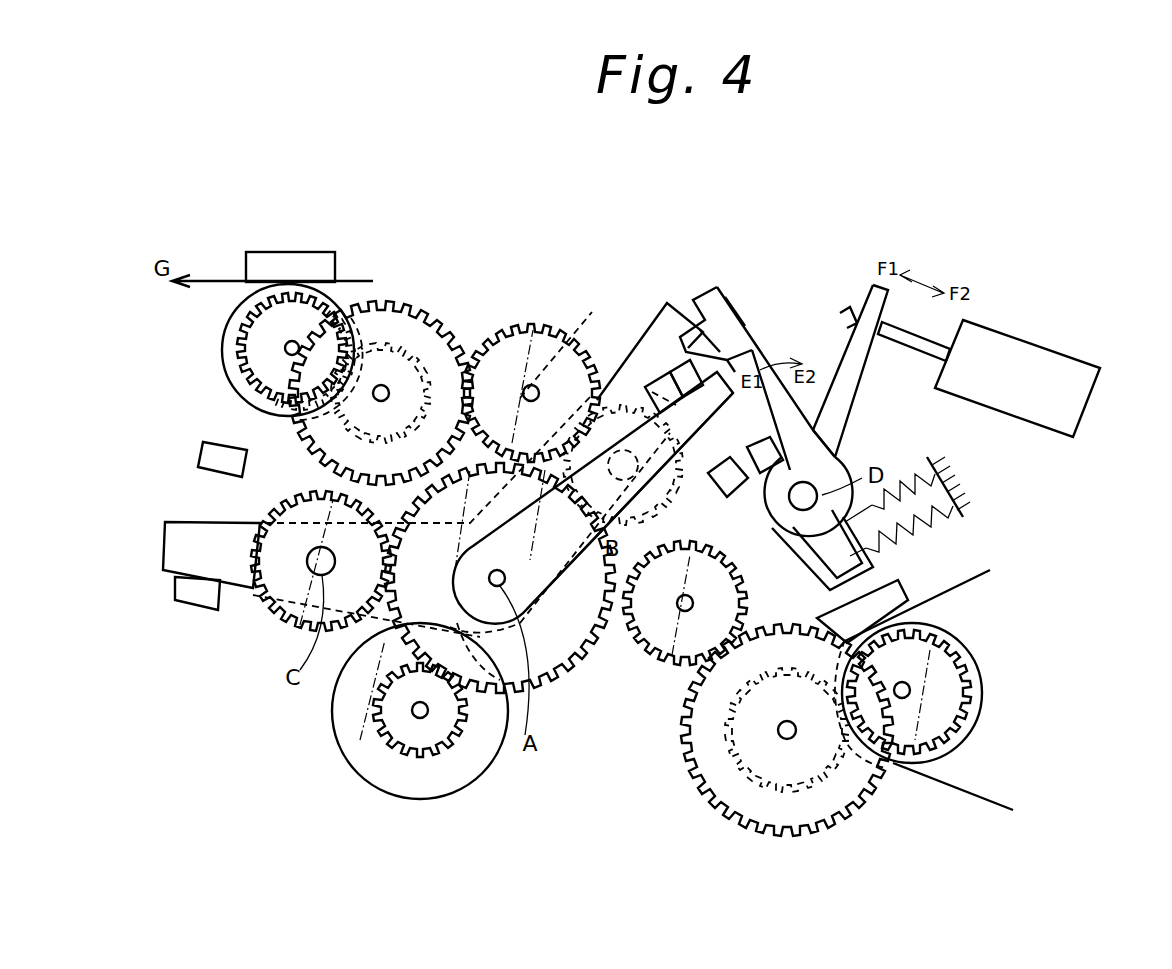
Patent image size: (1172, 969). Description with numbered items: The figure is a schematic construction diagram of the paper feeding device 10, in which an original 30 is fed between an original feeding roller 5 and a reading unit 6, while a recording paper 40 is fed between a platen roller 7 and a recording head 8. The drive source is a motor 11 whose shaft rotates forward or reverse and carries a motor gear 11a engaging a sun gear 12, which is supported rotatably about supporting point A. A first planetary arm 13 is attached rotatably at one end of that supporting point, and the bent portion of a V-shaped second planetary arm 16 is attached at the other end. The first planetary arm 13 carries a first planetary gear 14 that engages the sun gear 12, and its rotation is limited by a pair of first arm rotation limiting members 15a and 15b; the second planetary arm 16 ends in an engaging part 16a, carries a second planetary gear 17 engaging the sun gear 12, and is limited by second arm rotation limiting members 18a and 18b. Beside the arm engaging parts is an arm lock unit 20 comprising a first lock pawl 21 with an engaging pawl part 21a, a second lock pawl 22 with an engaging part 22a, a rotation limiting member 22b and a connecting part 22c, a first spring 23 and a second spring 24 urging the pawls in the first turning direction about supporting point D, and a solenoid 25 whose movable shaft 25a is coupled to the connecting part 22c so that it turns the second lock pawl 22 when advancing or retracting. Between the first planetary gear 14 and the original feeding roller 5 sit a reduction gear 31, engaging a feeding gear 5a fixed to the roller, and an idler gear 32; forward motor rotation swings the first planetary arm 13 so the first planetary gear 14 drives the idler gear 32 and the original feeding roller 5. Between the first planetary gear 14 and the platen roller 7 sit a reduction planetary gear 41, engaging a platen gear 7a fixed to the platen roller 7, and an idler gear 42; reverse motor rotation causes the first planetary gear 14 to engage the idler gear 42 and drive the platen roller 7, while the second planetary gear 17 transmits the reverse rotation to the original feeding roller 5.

The original feeding roller 5 is at (222, 323).
The feeding gear 5a is at (240, 357).
The reading unit 6 is at (302, 252).
The platen roller 7 is at (996, 709).
The platen gear 7a is at (945, 640).
The recording head 8 is at (905, 590).
The paper feeding device 10 is at (700, 190).
The motor 11 is at (383, 806).
The motor gear 11a is at (460, 752).
The sun gear 12 is at (560, 688).
The first planetary arm 13 is at (584, 560).
The first planetary gear 14 is at (636, 357).
The first arm rotation limiting member 15a is at (662, 372).
The first arm rotation limiting member 15b is at (758, 485).
The second planetary arm 16 is at (650, 420).
The engaging part 16a is at (700, 330).
The second planetary gear 17 is at (265, 608).
The second arm rotation limiting member 18a is at (195, 600).
The second arm rotation limiting member 18b is at (200, 458).
The arm lock unit 20 is at (910, 210).
The first lock pawl 21 is at (838, 465).
The engaging pawl part 21a is at (715, 465).
The second lock pawl 22 is at (769, 336).
The engaging part 22a is at (733, 297).
The rotation limiting member 22b is at (800, 536).
The connecting part 22c is at (867, 293).
The first spring 23 is at (950, 450).
The second spring 24 is at (968, 512).
The solenoid 25 is at (1080, 347).
The movable shaft 25a is at (990, 330).
The original 30 is at (212, 280).
The reduction gear 31 is at (405, 302).
The idler gear 32 is at (500, 326).
The recording paper 40 is at (950, 795).
The reduction planetary gear 41 is at (862, 800).
The idler gear 42 is at (680, 662).